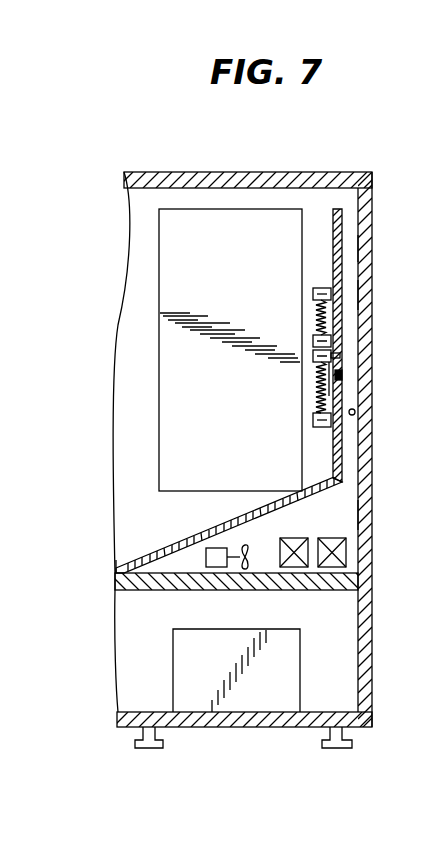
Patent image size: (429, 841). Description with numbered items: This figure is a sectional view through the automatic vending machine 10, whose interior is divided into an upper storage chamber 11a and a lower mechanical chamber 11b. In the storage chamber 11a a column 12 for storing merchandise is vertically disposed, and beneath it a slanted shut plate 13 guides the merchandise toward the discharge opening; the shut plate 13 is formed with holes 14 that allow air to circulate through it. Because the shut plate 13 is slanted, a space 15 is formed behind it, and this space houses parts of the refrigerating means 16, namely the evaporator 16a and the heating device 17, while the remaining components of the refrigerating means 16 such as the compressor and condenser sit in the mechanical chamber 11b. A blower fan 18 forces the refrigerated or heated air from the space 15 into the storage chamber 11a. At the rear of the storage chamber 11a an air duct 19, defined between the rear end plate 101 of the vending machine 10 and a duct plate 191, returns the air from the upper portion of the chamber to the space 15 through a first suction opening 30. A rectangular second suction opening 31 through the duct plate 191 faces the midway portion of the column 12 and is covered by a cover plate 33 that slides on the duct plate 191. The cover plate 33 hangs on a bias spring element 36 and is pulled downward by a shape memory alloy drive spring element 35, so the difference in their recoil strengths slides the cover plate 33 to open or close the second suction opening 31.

The automatic vending machine 10 is at (372, 181).
The storage chamber 11a is at (296, 200).
The mechanical chamber 11b is at (343, 630).
The column 12 is at (191, 225).
The shut plate 13 is at (137, 560).
The holes 14 is at (178, 550).
The space 15 is at (335, 515).
The refrigerating means 16 is at (305, 682).
The evaporator 16a is at (300, 543).
The heating device 17 is at (343, 552).
The blower fan 18 is at (214, 568).
The air duct 19 is at (352, 295).
The duct plate 191 is at (352, 253).
The first suction opening 30 is at (347, 202).
The second suction opening 31 is at (341, 377).
The cover plate 33 is at (340, 352).
The spring element 35 is at (318, 365).
The spring element 36 is at (320, 315).
The rear end plate 101 is at (355, 412).